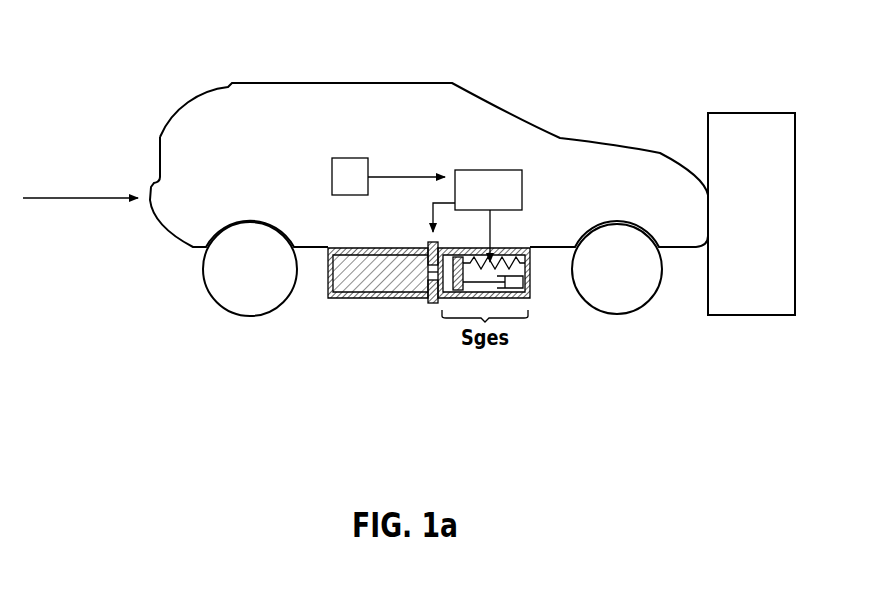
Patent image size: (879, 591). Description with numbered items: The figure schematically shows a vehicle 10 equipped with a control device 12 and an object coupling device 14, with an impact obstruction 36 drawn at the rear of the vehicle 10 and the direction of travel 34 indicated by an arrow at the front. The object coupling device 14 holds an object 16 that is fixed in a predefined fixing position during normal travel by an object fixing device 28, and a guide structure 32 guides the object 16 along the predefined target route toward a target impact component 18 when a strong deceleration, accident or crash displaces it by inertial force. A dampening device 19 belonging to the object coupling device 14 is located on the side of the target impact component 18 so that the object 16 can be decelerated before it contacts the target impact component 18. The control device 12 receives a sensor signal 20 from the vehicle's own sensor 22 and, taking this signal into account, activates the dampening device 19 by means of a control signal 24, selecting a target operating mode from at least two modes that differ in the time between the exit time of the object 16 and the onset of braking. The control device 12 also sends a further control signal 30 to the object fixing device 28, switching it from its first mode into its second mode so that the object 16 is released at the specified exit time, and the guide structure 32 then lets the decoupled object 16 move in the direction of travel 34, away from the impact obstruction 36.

The vehicle 10 is at (281, 81).
The control device 12 is at (485, 169).
The object coupling device 14 is at (345, 311).
The object 16 is at (351, 262).
The target impact component 18 is at (510, 283).
The dampening device 19 is at (517, 247).
The sensor signal 20 is at (397, 176).
The vehicle's own sensor 22 is at (331, 164).
The control signal 24 is at (491, 233).
The object fixing device 28 is at (433, 305).
The further control signal 30 is at (432, 211).
The guide structure 32 is at (378, 296).
The direction of travel 34 is at (68, 196).
The impact obstruction 36 is at (748, 112).